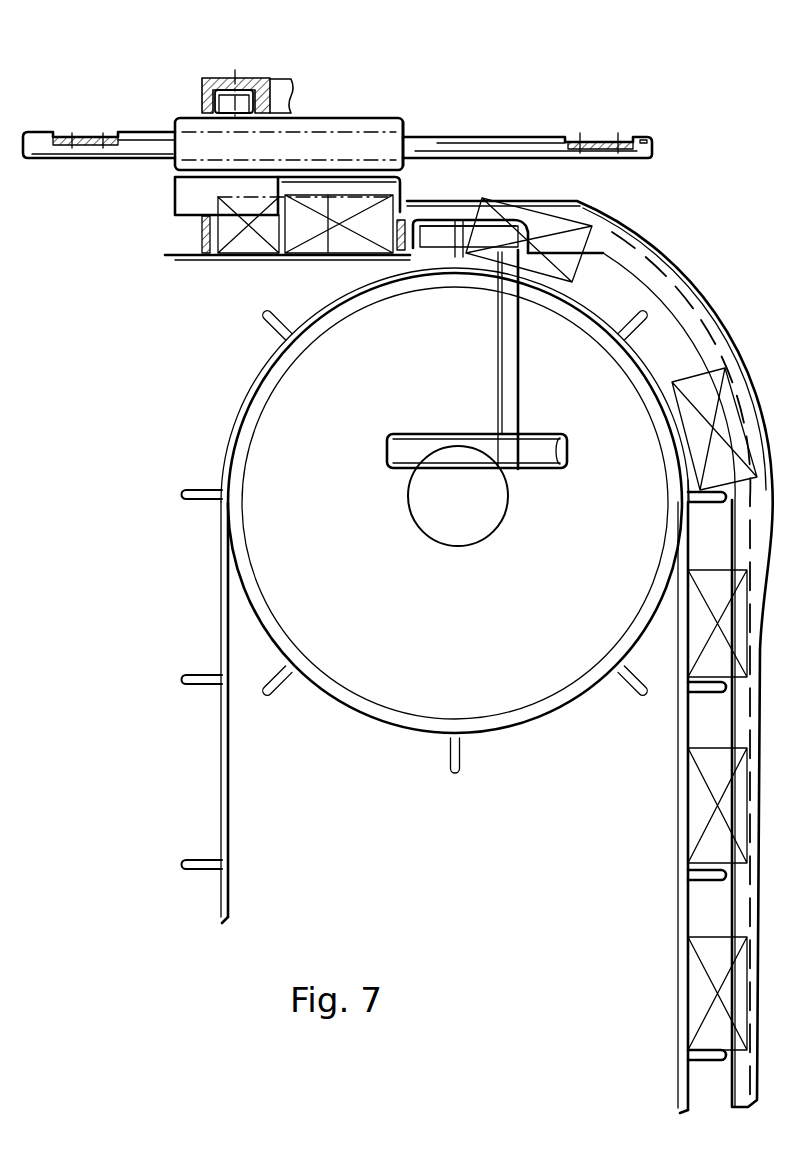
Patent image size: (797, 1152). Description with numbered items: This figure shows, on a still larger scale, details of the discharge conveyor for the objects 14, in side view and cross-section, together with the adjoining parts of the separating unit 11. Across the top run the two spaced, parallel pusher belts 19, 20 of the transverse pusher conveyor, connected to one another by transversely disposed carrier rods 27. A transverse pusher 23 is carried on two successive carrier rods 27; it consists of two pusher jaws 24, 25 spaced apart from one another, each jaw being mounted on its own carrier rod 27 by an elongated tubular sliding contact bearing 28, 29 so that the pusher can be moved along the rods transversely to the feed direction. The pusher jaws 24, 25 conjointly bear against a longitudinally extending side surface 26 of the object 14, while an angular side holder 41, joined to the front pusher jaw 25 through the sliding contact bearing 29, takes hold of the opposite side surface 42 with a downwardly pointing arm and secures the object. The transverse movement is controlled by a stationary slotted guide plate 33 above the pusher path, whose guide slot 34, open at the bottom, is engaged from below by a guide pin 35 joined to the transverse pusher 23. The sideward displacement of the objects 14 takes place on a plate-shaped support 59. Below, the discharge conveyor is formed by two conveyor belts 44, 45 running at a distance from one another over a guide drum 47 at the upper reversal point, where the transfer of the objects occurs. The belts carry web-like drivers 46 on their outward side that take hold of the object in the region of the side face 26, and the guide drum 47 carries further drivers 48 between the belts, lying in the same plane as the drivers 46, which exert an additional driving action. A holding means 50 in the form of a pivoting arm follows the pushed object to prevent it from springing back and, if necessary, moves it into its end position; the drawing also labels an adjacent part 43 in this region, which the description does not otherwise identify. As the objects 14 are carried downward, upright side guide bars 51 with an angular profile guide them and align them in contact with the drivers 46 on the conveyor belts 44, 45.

The separating unit 11 is at (475, 107).
The objects 14 is at (353, 241).
The pusher belt 19 is at (595, 138).
The pusher belt 20 is at (63, 137).
The transverse pusher 23 is at (367, 105).
The pusher jaw 24 is at (188, 192).
The pusher jaw 25 is at (194, 212).
The side surface 26 is at (232, 253).
The carrier rod 27 is at (527, 145).
The sliding contact bearing 28 is at (395, 125).
The sliding contact bearing 29 is at (413, 106).
The guide plate 33 is at (283, 85).
The guide slot 34 is at (252, 78).
The guide pin 35 is at (218, 102).
The side holder 41 is at (414, 173).
The side surface 42 is at (395, 238).
The pole cup 43 is at (402, 192).
The conveyor belt 44 is at (221, 630).
The conveyor belt 45 is at (450, 654).
The drivers 46 is at (193, 686).
The guide drum 47 is at (433, 646).
The drivers 48 is at (284, 682).
The holding means 50 is at (442, 240).
The guide bars 51 is at (752, 890).
The support 59 is at (243, 260).